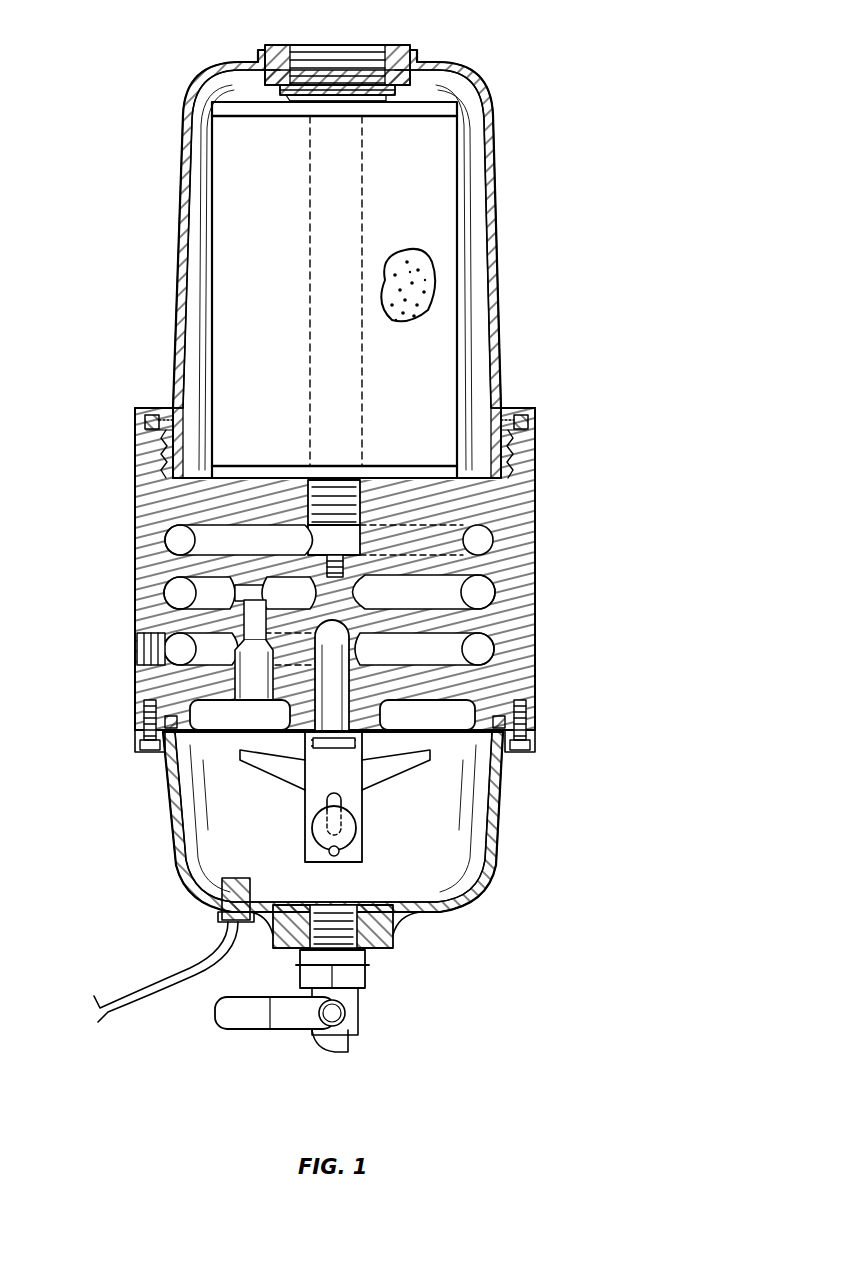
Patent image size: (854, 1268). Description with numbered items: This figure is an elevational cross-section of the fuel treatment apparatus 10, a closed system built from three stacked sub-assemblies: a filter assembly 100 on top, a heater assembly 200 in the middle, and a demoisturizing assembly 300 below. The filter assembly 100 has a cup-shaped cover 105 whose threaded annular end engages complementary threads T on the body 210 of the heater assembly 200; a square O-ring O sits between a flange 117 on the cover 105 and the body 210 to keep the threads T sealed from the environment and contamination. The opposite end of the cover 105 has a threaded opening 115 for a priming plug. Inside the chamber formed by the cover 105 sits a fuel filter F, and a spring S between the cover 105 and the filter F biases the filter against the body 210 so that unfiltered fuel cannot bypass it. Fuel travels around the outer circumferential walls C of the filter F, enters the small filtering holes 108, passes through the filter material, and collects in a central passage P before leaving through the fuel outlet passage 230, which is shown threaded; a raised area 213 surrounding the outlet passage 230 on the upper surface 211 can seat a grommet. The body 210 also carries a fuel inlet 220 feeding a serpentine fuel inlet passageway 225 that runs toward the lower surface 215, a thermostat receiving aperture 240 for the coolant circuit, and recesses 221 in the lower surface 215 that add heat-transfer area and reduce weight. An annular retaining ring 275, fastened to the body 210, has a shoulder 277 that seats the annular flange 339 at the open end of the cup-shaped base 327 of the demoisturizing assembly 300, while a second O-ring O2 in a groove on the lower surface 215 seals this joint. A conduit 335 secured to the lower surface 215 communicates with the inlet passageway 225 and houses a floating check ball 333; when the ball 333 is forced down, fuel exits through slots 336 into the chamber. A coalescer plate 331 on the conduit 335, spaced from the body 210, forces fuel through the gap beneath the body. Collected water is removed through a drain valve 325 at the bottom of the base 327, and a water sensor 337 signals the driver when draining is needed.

The fuel treatment apparatus 10 is at (566, 501).
The filter assembly 100 is at (513, 280).
The cup-shaped cover 105 is at (495, 343).
The filtering holes 108 is at (425, 295).
The opening 115 is at (405, 52).
The flange 117 is at (152, 412).
The heater assembly 200 is at (505, 608).
The body 210 is at (535, 524).
The upper surface 211 is at (195, 485).
The raised area 213 is at (318, 478).
The fuel inlet 220 is at (143, 648).
The recesses 221 is at (245, 718).
The fuel inlet passageway 225 is at (338, 720).
The fuel outlet passage 230 is at (335, 490).
The thermostat receiving aperture 240 is at (255, 605).
The annular retaining ring 275 is at (137, 738).
The shoulder 277 is at (528, 735).
The demoisturizing assembly 300 is at (357, 840).
The lower surface 215 is at (455, 772).
The cup-shaped base 327 is at (470, 888).
The drain valve 325 is at (312, 975).
The coalescer plate 331 is at (275, 785).
The floating check ball 333 is at (355, 838).
The conduit 335 is at (318, 822).
The slots 336 is at (341, 797).
The water sensor 337 is at (118, 1025).
The annular flange 339 is at (165, 735).
The spring S is at (366, 97).
The passage P is at (362, 240).
The outer circumferential walls C is at (465, 228).
The fuel filter F is at (435, 238).
The O-ring O is at (528, 420).
The O-ring O2 is at (170, 715).
The threads T is at (510, 453).